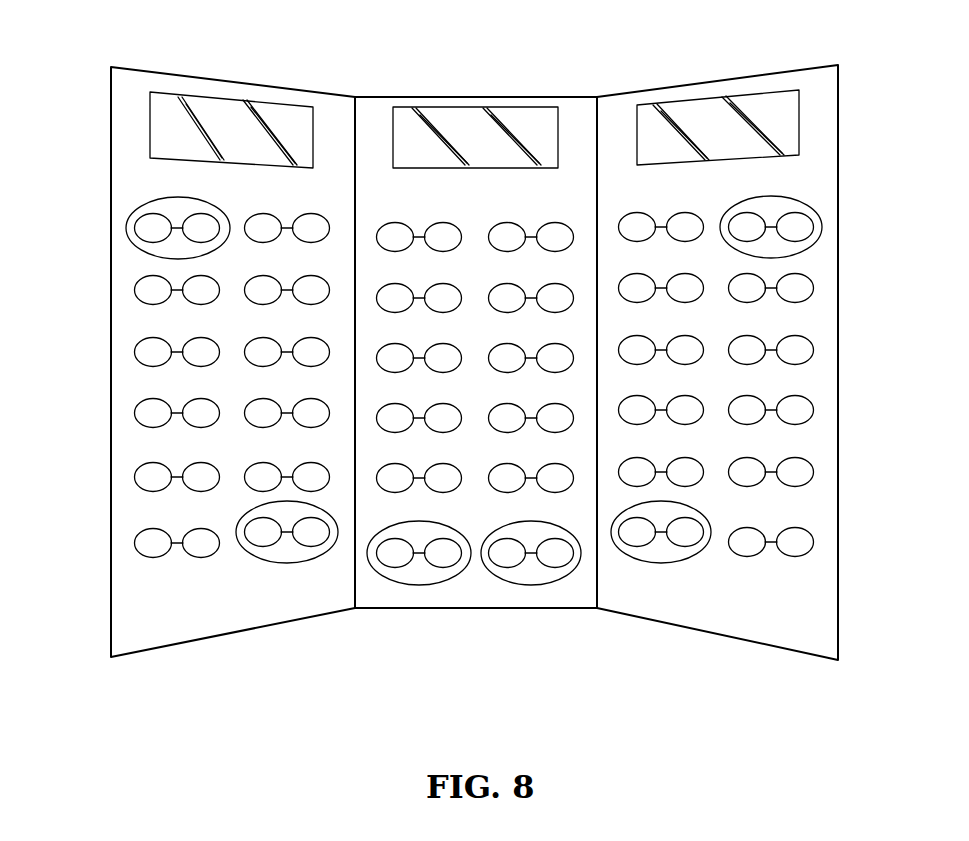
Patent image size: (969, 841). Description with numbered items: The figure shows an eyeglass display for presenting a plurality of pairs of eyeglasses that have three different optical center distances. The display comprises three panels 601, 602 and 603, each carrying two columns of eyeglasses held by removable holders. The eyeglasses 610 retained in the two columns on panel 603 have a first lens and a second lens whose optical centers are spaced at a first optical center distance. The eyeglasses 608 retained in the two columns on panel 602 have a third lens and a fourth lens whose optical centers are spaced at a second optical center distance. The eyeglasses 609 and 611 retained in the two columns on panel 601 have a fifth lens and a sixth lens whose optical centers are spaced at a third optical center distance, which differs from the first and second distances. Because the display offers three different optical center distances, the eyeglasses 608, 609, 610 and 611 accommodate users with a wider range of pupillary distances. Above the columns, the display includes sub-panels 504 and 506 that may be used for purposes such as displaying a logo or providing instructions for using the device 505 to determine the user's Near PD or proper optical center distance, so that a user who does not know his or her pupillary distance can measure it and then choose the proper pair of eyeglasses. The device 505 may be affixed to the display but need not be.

The panel 601 is at (800, 615).
The panel 603 is at (138, 582).
The sub-panel 504 is at (215, 117).
The device 505 is at (466, 127).
The sub-panel 506 is at (703, 115).
The panel 602 is at (148, 202).
The eyeglasses 608 is at (497, 580).
The eyeglasses 609 is at (747, 198).
The eyeglasses 610 is at (300, 564).
The eyeglasses 611 is at (648, 564).